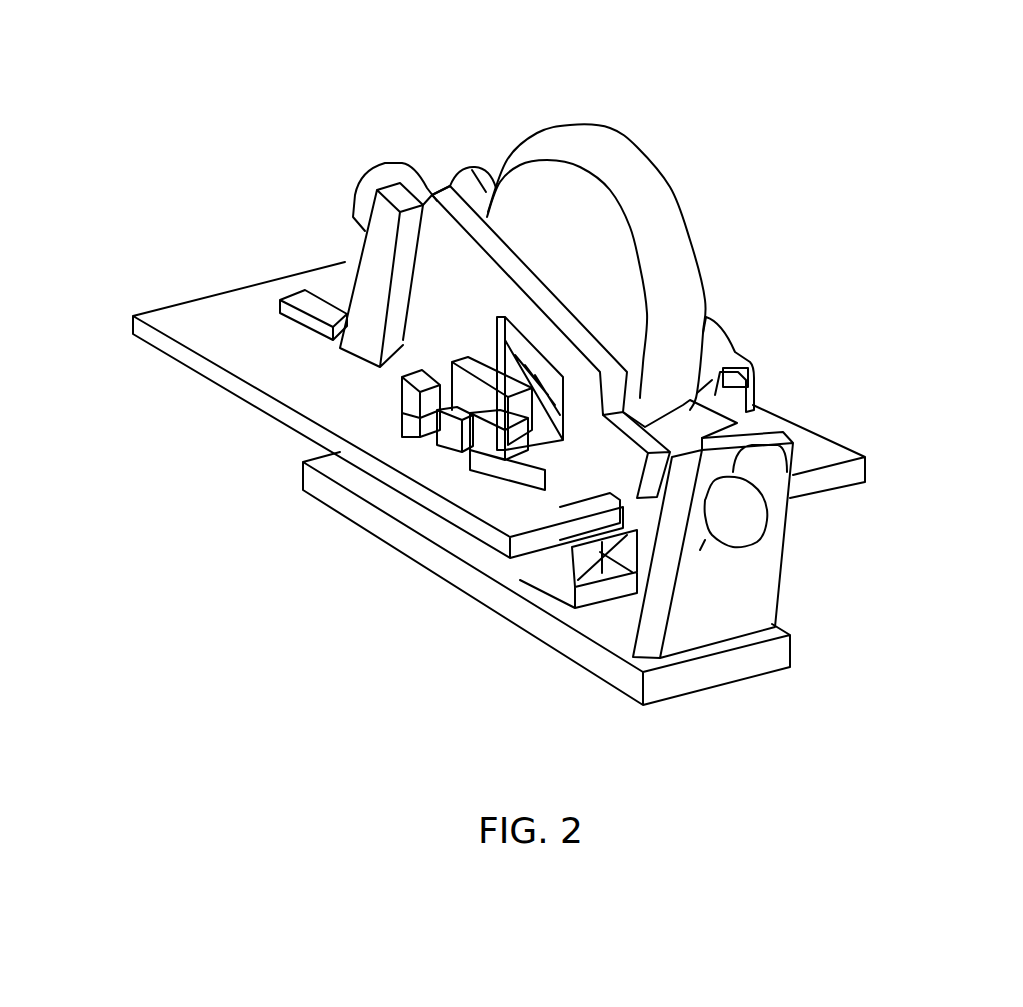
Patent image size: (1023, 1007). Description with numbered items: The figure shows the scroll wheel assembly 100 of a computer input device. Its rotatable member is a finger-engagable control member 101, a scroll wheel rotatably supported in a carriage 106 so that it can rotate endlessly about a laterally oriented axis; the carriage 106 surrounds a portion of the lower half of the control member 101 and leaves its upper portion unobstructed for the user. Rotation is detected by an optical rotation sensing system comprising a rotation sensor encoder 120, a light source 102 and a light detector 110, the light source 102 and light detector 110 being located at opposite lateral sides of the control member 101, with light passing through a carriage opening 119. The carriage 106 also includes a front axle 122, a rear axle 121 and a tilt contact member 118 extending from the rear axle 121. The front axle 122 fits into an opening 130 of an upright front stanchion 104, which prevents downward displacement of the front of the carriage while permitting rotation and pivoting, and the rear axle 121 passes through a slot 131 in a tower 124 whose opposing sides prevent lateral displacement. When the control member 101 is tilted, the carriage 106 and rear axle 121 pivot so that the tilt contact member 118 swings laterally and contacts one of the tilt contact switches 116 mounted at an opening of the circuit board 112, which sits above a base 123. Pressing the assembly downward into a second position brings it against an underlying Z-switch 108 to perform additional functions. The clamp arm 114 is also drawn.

The scroll wheel assembly 100 is at (664, 98).
The finger-engagable control member 101 is at (696, 243).
The light source 102 is at (754, 343).
The upright front stanchion 104 is at (796, 540).
The carriage 106 is at (719, 425).
The Z-switch 108 is at (618, 540).
The light detector 110 is at (435, 453).
The circuit board 112 is at (235, 410).
The clamp arm 114 is at (393, 137).
The tilt contact switch 116 is at (271, 279).
The tilt contact member 118 is at (345, 237).
The carriage opening 119 is at (497, 339).
The rotation sensor encoder 120 is at (535, 406).
The rear axle 121 is at (358, 154).
The front axle 122 is at (750, 489).
The base 123 is at (744, 685).
The tower 124 is at (482, 162).
The opening 130 is at (699, 551).
The slot 131 is at (440, 177).